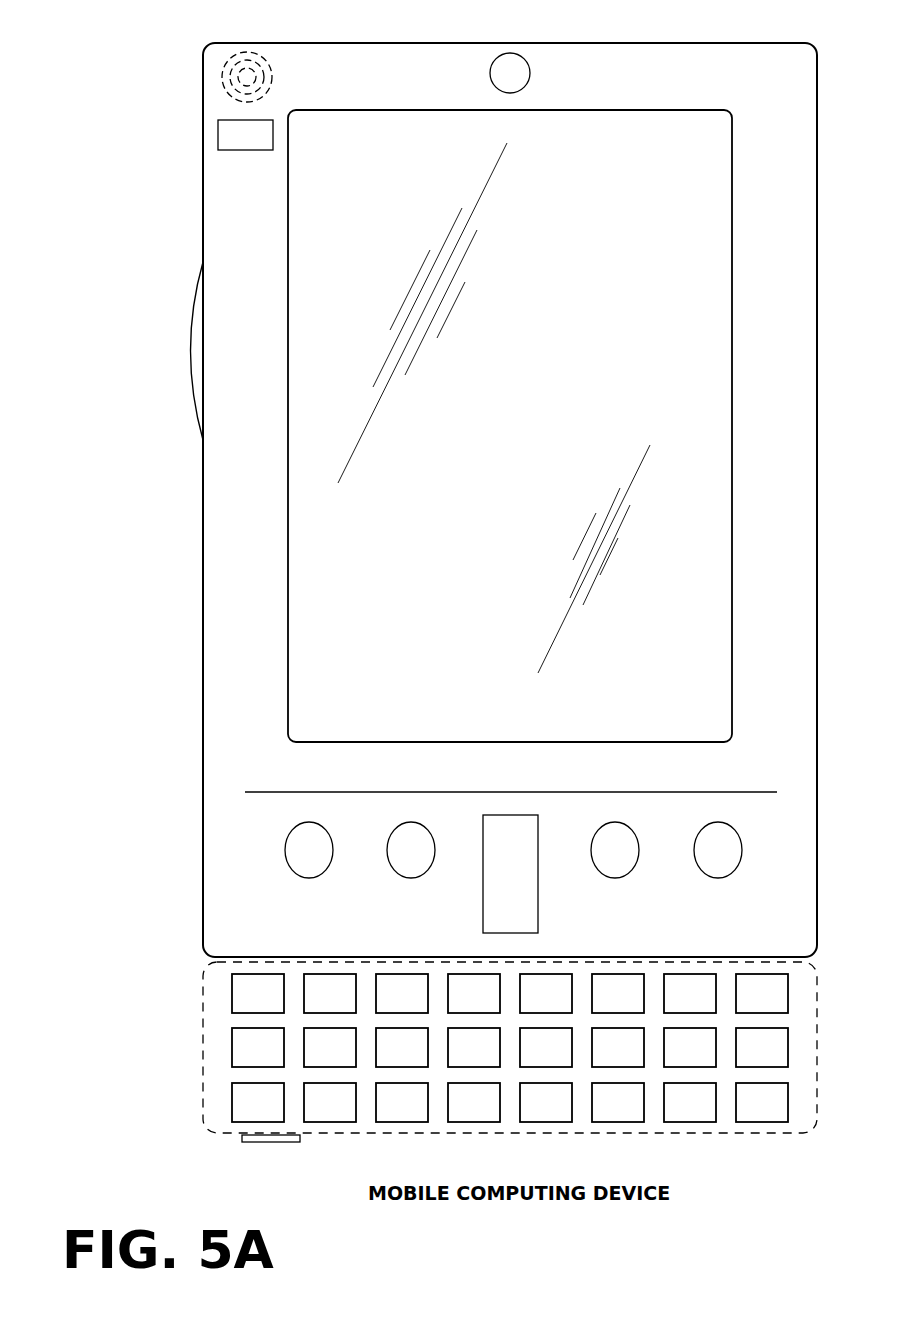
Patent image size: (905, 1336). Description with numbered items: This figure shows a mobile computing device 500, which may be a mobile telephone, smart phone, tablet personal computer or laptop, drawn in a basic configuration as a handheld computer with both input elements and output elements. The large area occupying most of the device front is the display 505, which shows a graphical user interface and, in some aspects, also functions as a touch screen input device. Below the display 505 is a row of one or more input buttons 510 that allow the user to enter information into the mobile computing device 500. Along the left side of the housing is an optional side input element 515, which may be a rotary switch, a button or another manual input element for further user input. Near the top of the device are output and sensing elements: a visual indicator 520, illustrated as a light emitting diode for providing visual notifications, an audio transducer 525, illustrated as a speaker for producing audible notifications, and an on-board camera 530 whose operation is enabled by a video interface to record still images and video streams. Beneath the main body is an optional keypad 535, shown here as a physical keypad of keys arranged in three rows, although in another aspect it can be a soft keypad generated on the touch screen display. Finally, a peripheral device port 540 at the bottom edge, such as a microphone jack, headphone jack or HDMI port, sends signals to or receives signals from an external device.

The mobile computing device 500 is at (840, 26).
The display 505 is at (311, 588).
The input buttons 510 is at (305, 878).
The side input element 515 is at (183, 352).
The visual indicator 520 is at (218, 135).
The audio transducer 525 is at (222, 79).
The on-board camera 530 is at (510, 53).
The keypad 535 is at (212, 1048).
The peripheral device port 540 is at (250, 1143).